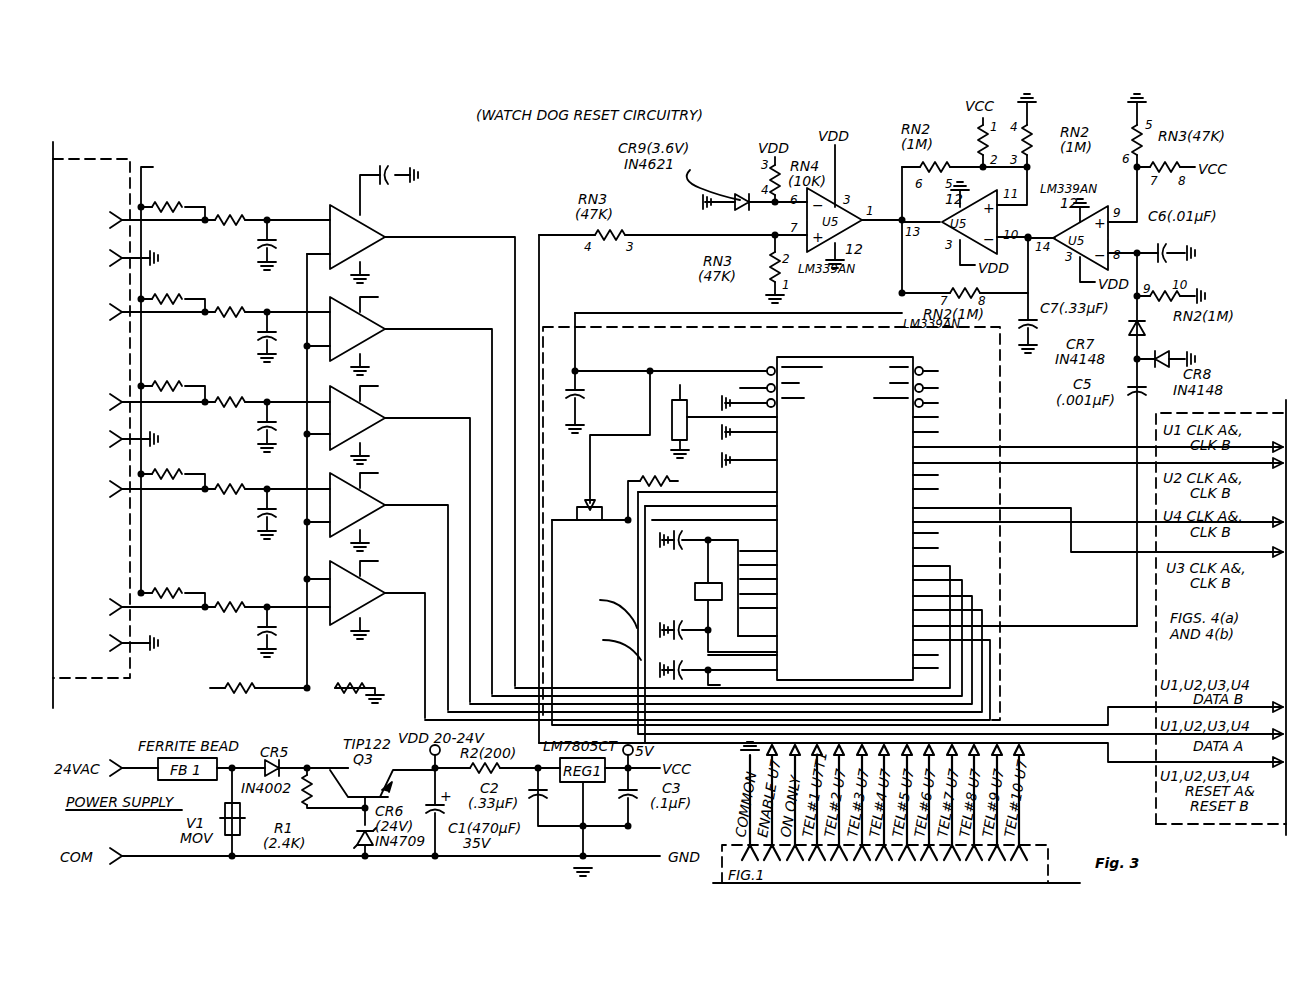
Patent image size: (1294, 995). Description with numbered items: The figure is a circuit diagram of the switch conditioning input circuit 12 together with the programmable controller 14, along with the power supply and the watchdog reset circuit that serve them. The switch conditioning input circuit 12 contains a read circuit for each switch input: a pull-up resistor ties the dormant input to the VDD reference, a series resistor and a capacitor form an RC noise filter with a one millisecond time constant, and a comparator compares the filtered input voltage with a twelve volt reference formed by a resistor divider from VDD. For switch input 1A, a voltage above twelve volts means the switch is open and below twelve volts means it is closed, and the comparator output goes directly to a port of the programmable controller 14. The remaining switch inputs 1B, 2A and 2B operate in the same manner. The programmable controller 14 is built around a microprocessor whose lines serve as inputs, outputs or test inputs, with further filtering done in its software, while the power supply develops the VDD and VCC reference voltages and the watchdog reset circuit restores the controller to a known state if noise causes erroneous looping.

The switch conditioning input circuit 12 is at (130, 161).
The programmable controller 14 is at (854, 537).
The switch input 1A is at (201, 227).
The switch input 1B is at (201, 315).
The switch input 2A is at (201, 404).
The switch input 2B is at (201, 492).